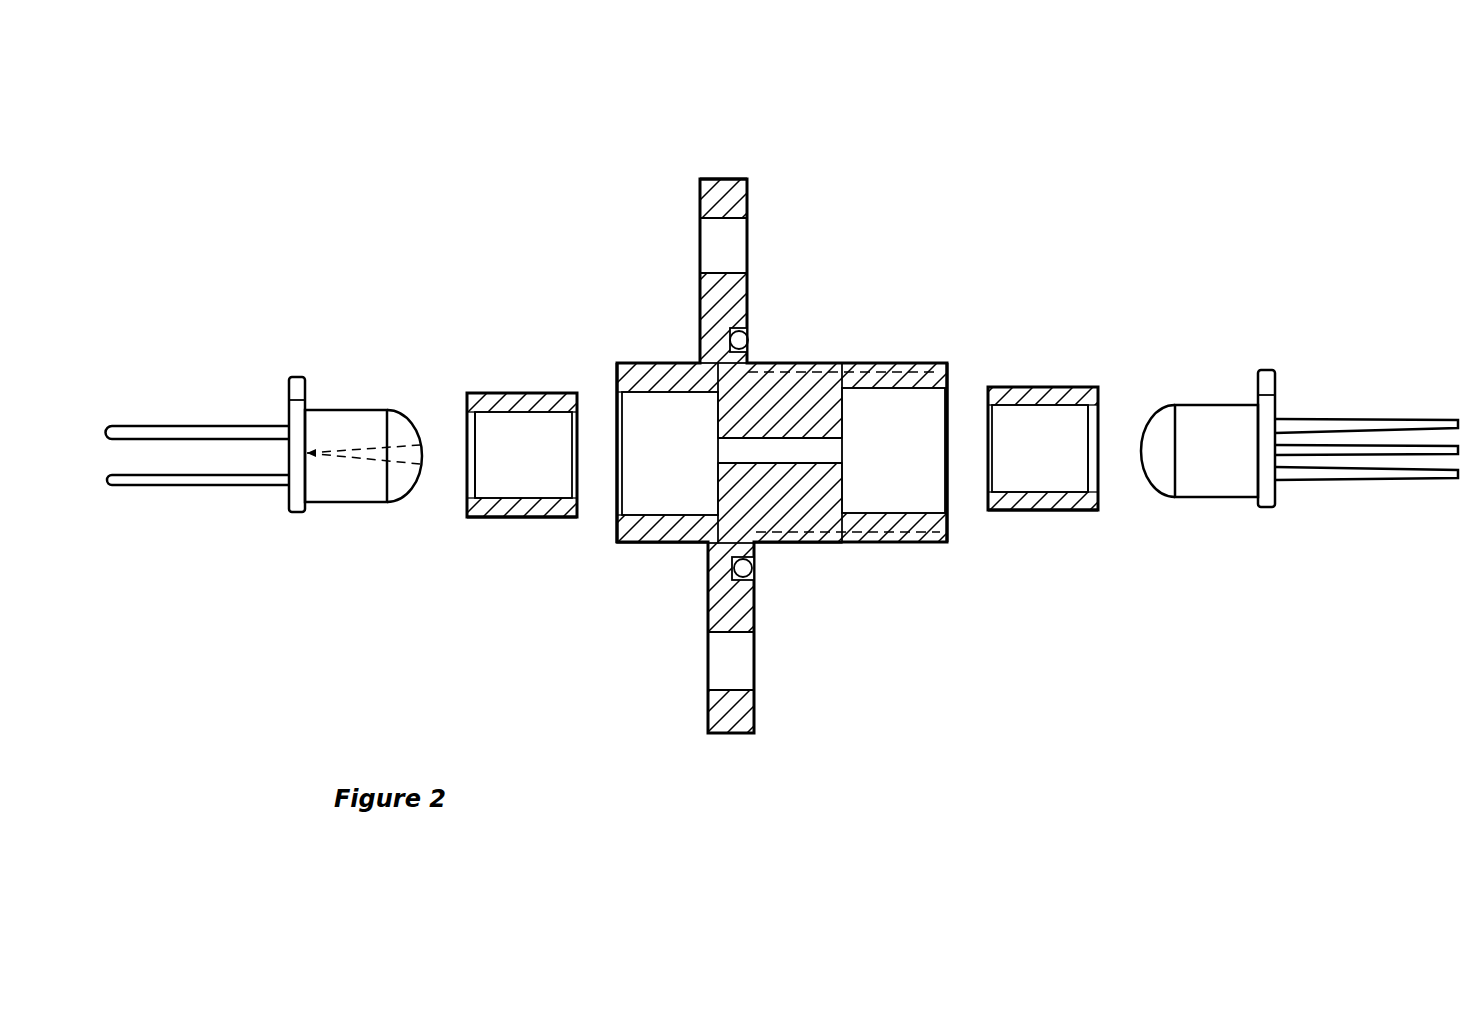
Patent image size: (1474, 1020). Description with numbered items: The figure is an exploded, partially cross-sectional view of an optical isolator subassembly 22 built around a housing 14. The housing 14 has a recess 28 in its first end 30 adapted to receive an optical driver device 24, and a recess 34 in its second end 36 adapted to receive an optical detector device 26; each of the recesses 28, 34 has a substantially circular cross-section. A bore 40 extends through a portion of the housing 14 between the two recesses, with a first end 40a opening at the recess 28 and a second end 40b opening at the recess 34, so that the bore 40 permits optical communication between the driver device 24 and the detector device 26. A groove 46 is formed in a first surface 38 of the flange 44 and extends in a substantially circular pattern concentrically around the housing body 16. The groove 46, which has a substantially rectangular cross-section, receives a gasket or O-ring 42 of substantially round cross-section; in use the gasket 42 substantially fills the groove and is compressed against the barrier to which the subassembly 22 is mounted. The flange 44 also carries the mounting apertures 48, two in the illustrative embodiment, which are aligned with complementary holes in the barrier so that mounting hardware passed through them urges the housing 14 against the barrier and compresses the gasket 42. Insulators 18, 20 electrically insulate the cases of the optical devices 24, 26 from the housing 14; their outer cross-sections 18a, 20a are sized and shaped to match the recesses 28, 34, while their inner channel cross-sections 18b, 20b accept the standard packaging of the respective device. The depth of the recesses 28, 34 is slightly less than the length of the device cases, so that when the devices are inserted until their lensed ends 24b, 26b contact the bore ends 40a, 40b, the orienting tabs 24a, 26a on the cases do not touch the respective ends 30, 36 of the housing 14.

The housing 14 is at (863, 356).
The housing body 16 is at (903, 545).
The insulator 18 is at (527, 393).
The outer cross-section 18a is at (518, 517).
The inner channel cross-section 18b is at (493, 430).
The insulator 20 is at (1038, 387).
The outer cross-section 20a is at (1032, 510).
The inner channel cross-section 20b is at (1057, 477).
The optical isolator subassembly 22 is at (365, 238).
The optical driver device 24 is at (355, 410).
The orienting tab 24a is at (293, 377).
The lensed end 24b is at (438, 457).
The optical detector device 26 is at (1207, 405).
The orienting tab 26a is at (1265, 370).
The lensed end 26b is at (1155, 483).
The recess 28 is at (632, 493).
The first end 30 is at (616, 348).
The recess 34 is at (938, 487).
The second end 36 is at (939, 343).
The first surface 38 is at (748, 200).
The bore 40 is at (808, 452).
The first end of bore 40a is at (733, 455).
The second end of bore 40b is at (830, 455).
The gasket 42 is at (750, 338).
The flange 44 is at (722, 170).
The groove 46 is at (748, 305).
The mounting apertures 48 is at (748, 252).